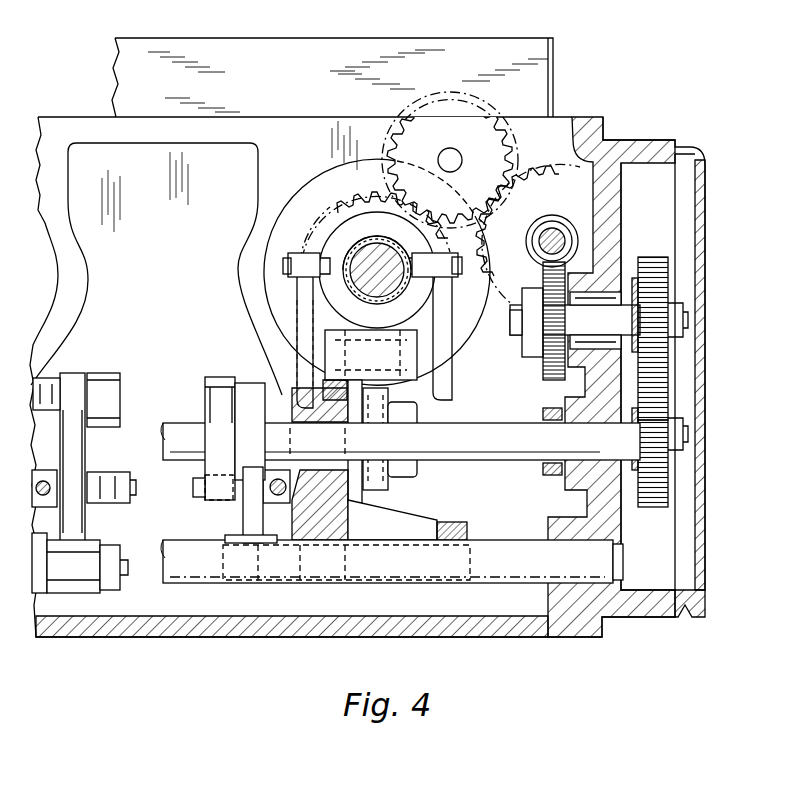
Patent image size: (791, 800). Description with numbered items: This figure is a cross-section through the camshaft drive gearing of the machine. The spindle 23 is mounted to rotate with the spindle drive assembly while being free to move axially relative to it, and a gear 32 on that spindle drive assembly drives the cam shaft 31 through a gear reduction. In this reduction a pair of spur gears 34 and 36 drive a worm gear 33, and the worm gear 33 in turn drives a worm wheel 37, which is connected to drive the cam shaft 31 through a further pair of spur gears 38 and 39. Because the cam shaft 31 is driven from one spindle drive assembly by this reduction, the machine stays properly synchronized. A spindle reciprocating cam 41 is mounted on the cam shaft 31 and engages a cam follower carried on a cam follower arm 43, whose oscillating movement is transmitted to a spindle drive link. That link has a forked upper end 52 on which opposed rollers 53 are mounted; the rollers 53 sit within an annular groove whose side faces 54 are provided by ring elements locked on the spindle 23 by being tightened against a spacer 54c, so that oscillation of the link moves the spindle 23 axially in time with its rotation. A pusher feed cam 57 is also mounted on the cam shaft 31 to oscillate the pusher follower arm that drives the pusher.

The spindle 23 is at (377, 270).
The cam shaft 31 is at (490, 448).
The gear 32 is at (338, 216).
The worm gear 33 is at (572, 232).
The spur gear 34 is at (487, 138).
The spur gear 36 is at (558, 178).
The worm wheel 37 is at (545, 366).
The spur gear 38 is at (657, 264).
The spur gear 39 is at (658, 498).
The spindle reciprocating cam 41 is at (368, 490).
The cam follower arm 43 is at (405, 380).
The forked upper end 52 is at (438, 322).
The opposed rollers 53 is at (366, 284).
The side faces 54 is at (318, 232).
The spacer 54c is at (398, 252).
The pusher feed cam 57 is at (212, 463).